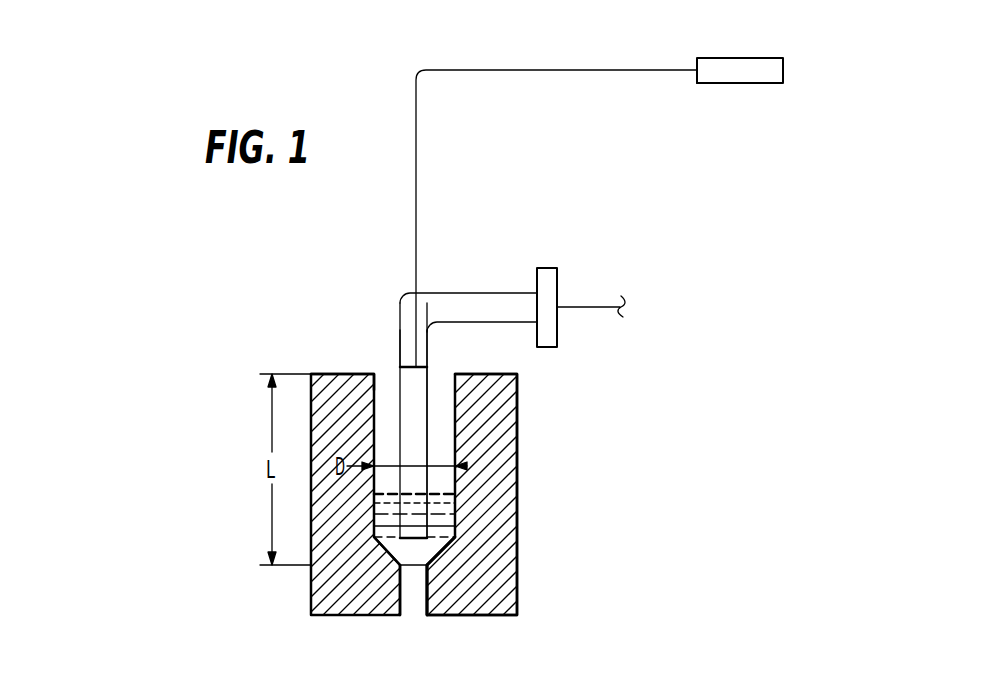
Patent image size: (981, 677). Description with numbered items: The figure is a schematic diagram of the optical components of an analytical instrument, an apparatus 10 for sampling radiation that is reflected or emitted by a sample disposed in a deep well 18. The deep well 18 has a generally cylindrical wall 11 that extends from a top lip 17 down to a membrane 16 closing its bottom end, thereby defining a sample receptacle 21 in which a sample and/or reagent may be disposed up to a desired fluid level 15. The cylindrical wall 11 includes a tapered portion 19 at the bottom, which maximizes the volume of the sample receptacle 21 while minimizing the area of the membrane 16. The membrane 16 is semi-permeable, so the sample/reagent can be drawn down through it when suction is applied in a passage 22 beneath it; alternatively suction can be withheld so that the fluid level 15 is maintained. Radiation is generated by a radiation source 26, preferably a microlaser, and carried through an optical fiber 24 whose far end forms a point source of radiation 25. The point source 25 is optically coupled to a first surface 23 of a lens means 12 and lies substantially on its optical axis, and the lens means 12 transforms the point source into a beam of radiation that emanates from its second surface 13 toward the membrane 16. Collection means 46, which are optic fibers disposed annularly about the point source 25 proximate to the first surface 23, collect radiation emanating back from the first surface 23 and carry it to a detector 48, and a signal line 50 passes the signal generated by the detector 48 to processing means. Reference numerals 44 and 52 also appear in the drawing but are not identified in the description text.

The apparatus for sampling radiation 10 is at (421, 432).
The cylindrical wall 11 is at (372, 402).
The lens means 12 is at (417, 418).
The second surface 13 is at (397, 562).
The fluid level 15 is at (448, 493).
The membrane 16 is at (417, 568).
The top lip 17 is at (381, 368).
The deep well 18 is at (477, 535).
The tapered portion 19 is at (440, 553).
The sample receptacle 21 is at (385, 482).
The passage 22 is at (413, 600).
The first surface 23 is at (413, 366).
The optical fiber 24 is at (416, 160).
The point source of radiation 25 is at (418, 366).
The radiation source 26 is at (745, 58).
The tube outer wall 44 is at (427, 380).
The collection means 46 is at (514, 307).
The detector 48 is at (553, 268).
The signal line 50 is at (607, 300).
The connecting lead 52 is at (697, 83).